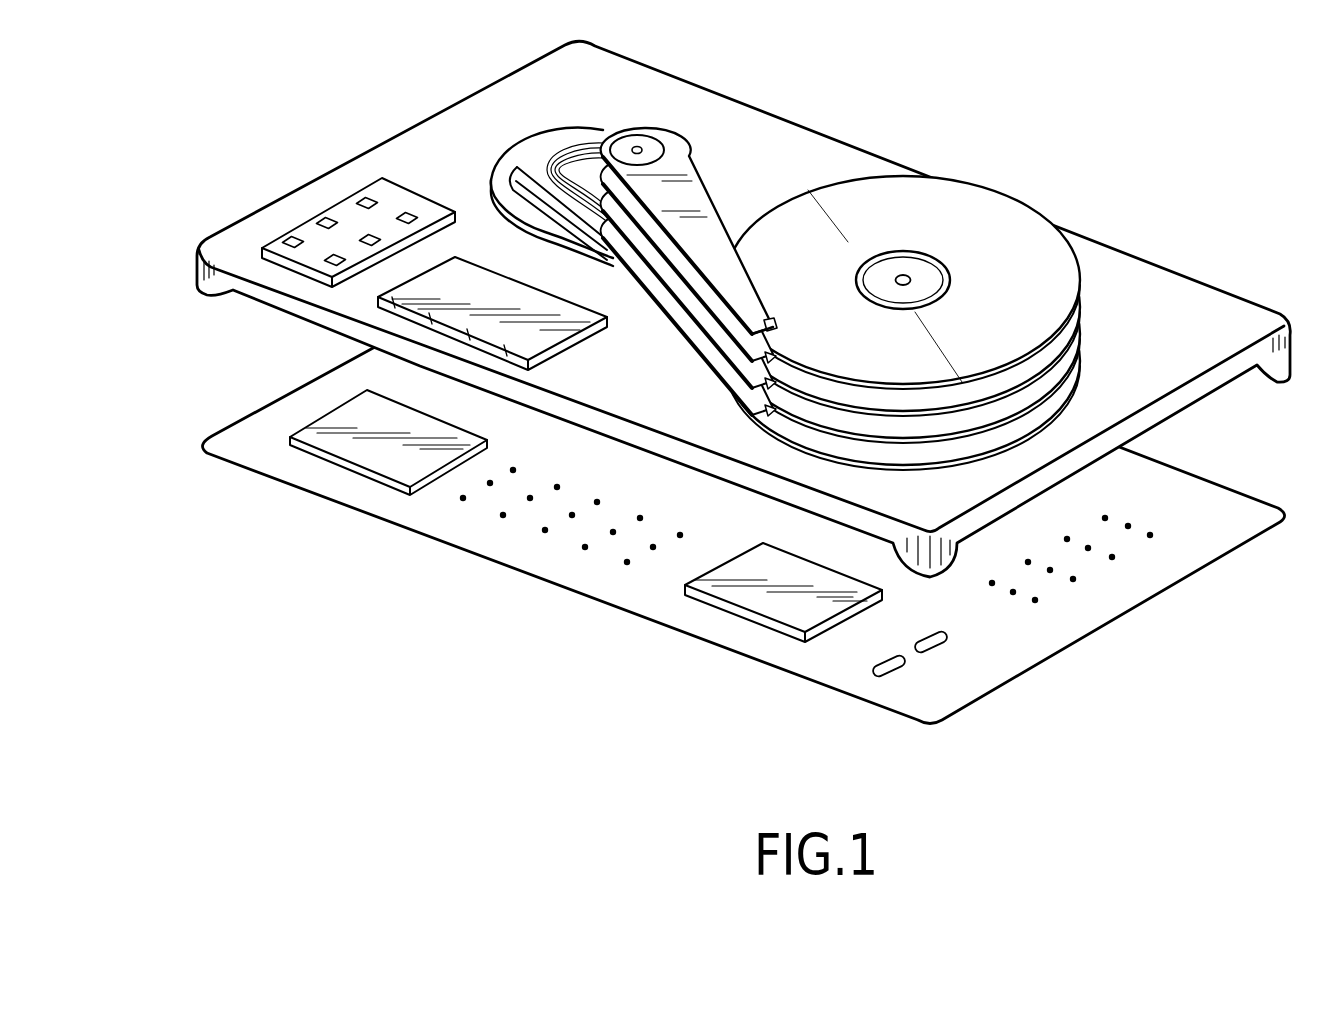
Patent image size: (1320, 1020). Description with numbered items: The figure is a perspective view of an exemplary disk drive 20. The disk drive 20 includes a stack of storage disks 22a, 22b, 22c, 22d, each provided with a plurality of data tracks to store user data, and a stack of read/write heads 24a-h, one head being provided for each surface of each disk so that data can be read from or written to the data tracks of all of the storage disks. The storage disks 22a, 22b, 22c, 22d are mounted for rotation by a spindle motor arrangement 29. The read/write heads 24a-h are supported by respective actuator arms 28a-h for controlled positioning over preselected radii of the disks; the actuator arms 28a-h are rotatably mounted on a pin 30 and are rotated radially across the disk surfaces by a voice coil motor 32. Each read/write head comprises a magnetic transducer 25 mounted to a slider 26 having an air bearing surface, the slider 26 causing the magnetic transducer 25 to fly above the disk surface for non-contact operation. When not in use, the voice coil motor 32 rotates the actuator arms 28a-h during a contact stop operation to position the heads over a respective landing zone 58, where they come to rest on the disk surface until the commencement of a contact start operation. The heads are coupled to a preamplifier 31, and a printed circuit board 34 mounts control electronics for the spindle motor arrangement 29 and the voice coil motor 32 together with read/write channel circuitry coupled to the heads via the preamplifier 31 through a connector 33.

The disk drive 20 is at (241, 150).
The storage disk 22a is at (1053, 237).
The storage disk 22b is at (1080, 322).
The storage disk 22c is at (1078, 357).
The storage disk 22d is at (1072, 388).
The read/write heads 24a-h is at (778, 316).
The magnetic transducer 25 is at (778, 338).
The slider 26 is at (778, 324).
The actuator arms 28a-h is at (714, 186).
The spindle motor arrangement 29 is at (903, 276).
The pin 30 is at (642, 148).
The preamplifier 31 is at (552, 353).
The voice coil motor 32 is at (527, 155).
The connector 33 is at (290, 232).
The printed circuit board 34 is at (1035, 645).
The landing zone 58 is at (948, 264).